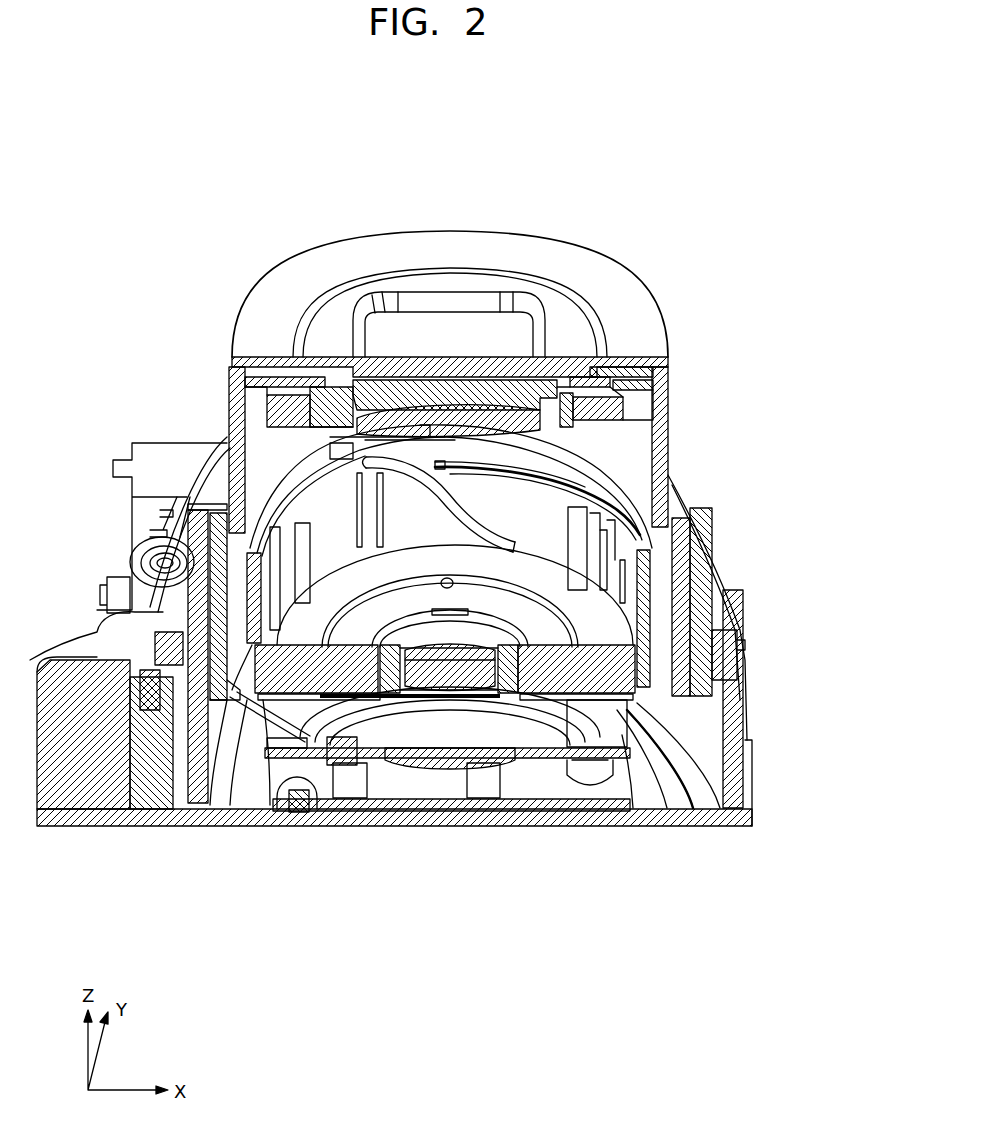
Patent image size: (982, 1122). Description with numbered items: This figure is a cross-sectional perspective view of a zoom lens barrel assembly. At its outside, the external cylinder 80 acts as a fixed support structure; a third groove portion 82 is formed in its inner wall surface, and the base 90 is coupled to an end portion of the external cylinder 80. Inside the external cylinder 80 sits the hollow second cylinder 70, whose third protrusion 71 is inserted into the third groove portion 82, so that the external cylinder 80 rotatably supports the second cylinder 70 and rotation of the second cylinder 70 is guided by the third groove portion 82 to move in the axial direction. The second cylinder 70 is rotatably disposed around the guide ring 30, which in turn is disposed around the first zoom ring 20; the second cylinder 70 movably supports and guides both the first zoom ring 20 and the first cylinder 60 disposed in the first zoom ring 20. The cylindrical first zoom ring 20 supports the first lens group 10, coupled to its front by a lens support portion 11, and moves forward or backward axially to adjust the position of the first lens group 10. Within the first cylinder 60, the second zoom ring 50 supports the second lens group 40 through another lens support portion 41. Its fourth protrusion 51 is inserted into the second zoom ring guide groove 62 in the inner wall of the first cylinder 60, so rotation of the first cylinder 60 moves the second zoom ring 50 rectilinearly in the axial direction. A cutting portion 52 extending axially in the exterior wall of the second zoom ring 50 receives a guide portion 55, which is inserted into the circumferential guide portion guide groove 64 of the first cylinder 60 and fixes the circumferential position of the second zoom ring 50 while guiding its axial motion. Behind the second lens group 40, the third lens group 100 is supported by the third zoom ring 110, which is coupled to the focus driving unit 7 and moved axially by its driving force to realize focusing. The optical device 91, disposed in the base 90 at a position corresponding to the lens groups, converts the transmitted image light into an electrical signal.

The focus driving unit 7 is at (137, 566).
The first lens group 10 is at (477, 402).
The lens support portion 11 is at (598, 385).
The first zoom ring 20 is at (668, 413).
The guide ring 30 is at (680, 645).
The second lens group 40 is at (428, 660).
The lens support portion 41 is at (385, 660).
The second zoom ring 50 is at (590, 694).
The fourth protrusion 51 is at (246, 625).
The cutting portion 52 is at (573, 572).
The guide portion 55 is at (592, 552).
The first cylinder 60 is at (629, 497).
The second zoom ring guide groove 62 is at (400, 490).
The guide portion guide groove 64 is at (455, 467).
The second cylinder 70 is at (711, 599).
The third protrusion 71 is at (722, 658).
The external cylinder 80 is at (744, 735).
The third groove portion 82 is at (735, 639).
The base 90 is at (693, 827).
The optical device 91 is at (432, 788).
The third lens group 100 is at (463, 758).
The third zoom ring 110 is at (305, 745).